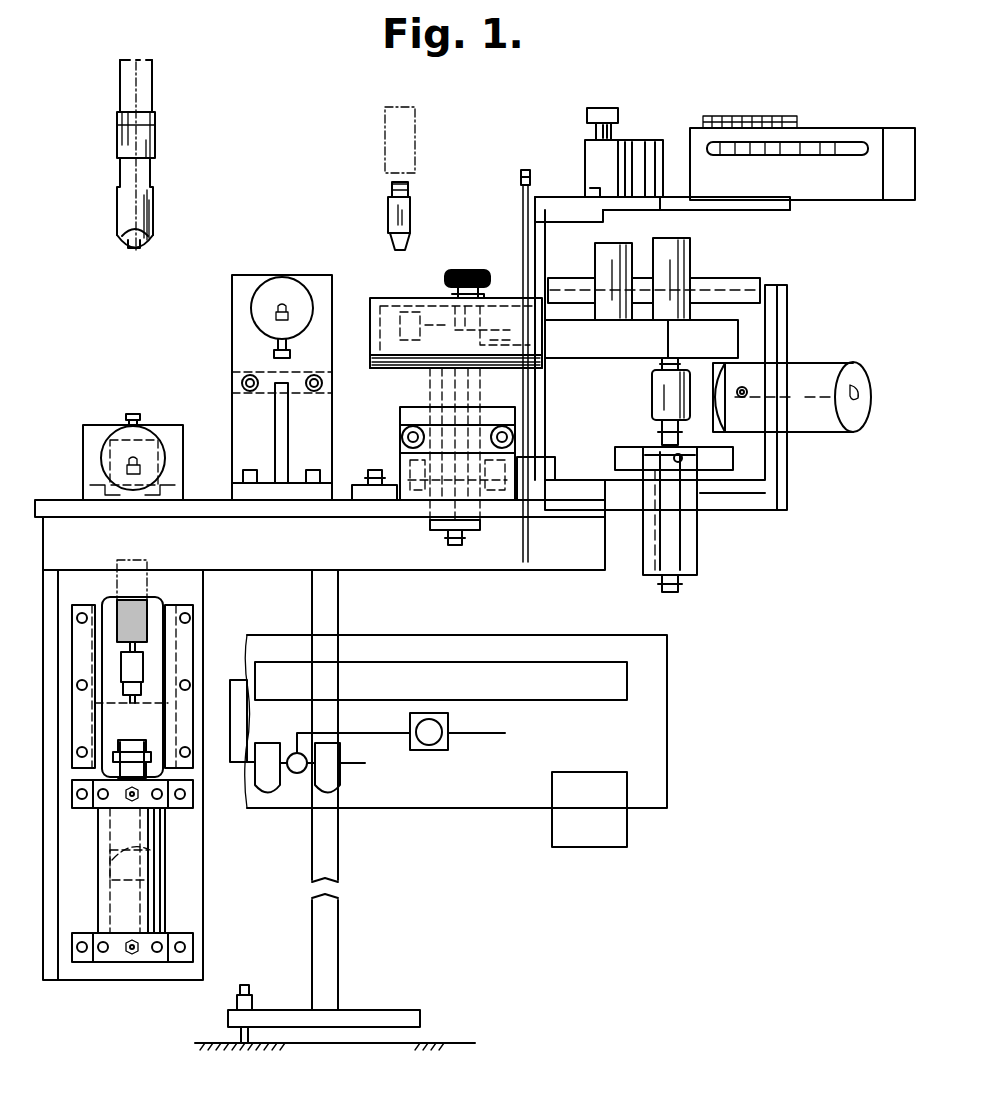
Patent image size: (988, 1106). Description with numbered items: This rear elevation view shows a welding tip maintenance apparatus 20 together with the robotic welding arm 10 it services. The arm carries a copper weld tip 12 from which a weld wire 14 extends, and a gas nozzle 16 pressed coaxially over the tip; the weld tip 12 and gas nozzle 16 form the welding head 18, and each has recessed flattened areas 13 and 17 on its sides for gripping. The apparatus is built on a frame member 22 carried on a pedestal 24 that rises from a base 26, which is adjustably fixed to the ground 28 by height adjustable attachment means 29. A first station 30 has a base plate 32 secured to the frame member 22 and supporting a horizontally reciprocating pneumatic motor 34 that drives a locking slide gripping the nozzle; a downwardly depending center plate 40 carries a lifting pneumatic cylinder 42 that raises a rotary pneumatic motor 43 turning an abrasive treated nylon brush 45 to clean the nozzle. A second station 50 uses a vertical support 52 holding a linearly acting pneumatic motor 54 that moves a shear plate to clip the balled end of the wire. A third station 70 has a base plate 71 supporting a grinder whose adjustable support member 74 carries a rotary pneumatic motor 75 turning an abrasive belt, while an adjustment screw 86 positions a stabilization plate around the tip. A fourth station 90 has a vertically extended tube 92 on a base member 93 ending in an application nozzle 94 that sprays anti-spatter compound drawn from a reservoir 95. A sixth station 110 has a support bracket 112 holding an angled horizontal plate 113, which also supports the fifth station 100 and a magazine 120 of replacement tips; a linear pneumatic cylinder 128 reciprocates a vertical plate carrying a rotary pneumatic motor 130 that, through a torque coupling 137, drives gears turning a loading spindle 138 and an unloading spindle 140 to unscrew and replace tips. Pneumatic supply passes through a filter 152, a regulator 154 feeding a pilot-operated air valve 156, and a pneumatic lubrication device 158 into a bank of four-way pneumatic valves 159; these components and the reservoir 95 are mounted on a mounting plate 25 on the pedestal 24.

The robotic welding arm 10 is at (164, 95).
The recessed flattened areas 17 is at (153, 170).
The welding head 18 is at (104, 194).
The gas nozzle 16 is at (150, 214).
The weld wire 14 is at (133, 248).
The weld tip 12 is at (388, 212).
The recessed flattened areas 13 is at (396, 236).
The fourth station 90 is at (496, 345).
The application nozzle 94 is at (520, 179).
The vertically extended tube 92 is at (520, 216).
The support bracket 112 is at (541, 254).
The adjustment screw 86 is at (455, 270).
The third station 70 is at (448, 321).
The rotary pneumatic motor 75 is at (420, 362).
The fifth station 100 is at (622, 106).
The magazine 120 is at (818, 128).
The angled horizontal plate 113 is at (790, 204).
The sixth station 110 is at (756, 222).
The unloading spindle 140 is at (600, 254).
The loading spindle 138 is at (678, 265).
The torque coupling 137 is at (651, 395).
The linear pneumatic cylinder 128 is at (805, 430).
The rotary pneumatic motor 130 is at (690, 545).
The second station 50 is at (285, 371).
The linearly acting pneumatic motor 54 is at (258, 307).
The vertical support 52 is at (325, 422).
The adjustable support member 74 is at (418, 452).
The base plate 71 is at (395, 512).
The base member 93 is at (548, 512).
The maintenance apparatus 20 is at (117, 436).
The first station 30 is at (191, 418).
The pneumatic motor 34 is at (103, 458).
The base plate 32 is at (62, 503).
The frame member 22 is at (258, 560).
The abrasive treated nylon brush 45 is at (147, 628).
The bank of four-way pneumatic valves 159 is at (503, 624).
The mounting plate 25 is at (479, 733).
The regulator 154 is at (290, 755).
The pilot-operated air valve 156 is at (448, 750).
The filter 152 is at (340, 780).
The pneumatic lubrication device 158 is at (265, 792).
The reservoir 95 is at (612, 838).
The rotary pneumatic motor 43 is at (160, 855).
The lifting pneumatic cylinder 42 is at (145, 902).
The center plate 40 is at (196, 930).
The pedestal 24 is at (338, 898).
The base 26 is at (375, 1018).
The ground 28 is at (212, 1040).
The height adjustable attachment means 29 is at (252, 1043).